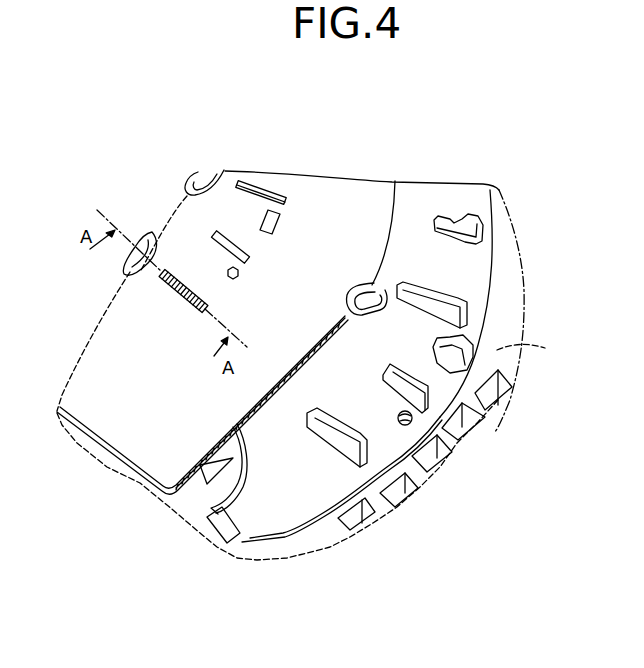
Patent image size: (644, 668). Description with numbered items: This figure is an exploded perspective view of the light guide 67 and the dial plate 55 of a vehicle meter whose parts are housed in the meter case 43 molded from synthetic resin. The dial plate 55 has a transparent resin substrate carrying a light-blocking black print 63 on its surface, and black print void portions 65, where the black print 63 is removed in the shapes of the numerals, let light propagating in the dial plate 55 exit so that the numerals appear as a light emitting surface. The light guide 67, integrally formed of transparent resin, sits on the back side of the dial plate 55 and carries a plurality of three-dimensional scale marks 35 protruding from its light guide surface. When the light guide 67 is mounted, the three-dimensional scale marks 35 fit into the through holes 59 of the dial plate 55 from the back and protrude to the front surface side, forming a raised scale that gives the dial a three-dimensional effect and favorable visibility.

The three-dimensional scale marks 35 is at (483, 227).
The meter case 43 is at (545, 348).
The dial plate 55 is at (110, 458).
The through holes 59 is at (267, 181).
The black print 63 is at (345, 212).
The black print void portions 65 is at (200, 168).
The light guide 67 is at (280, 542).